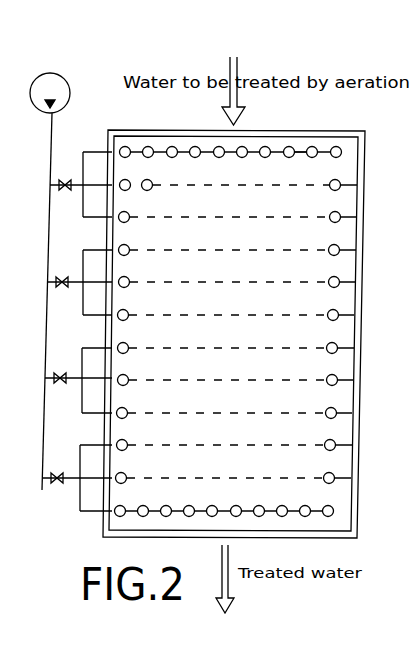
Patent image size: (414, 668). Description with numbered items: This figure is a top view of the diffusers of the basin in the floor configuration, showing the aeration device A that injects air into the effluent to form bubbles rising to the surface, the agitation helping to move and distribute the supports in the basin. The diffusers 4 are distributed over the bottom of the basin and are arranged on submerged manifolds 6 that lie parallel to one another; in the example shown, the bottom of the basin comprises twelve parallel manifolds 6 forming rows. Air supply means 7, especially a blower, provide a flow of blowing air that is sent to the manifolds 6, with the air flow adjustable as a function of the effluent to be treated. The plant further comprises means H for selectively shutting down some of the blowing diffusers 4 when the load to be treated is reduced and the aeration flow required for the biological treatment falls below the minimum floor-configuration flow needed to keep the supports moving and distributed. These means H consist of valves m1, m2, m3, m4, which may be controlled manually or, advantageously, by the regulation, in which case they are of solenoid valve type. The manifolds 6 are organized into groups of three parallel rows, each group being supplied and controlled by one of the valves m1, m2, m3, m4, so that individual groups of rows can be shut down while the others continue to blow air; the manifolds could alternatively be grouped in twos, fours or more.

The air supply means 7 is at (52, 73).
The aeration device A is at (84, 93).
The diffusers 4 is at (275, 133).
The manifolds 6 is at (301, 150).
The valve m1 is at (66, 177).
The valve m2 is at (62, 274).
The valve m3 is at (60, 370).
The valve m4 is at (57, 470).
The means for selectively shutting down diffusers H is at (55, 496).